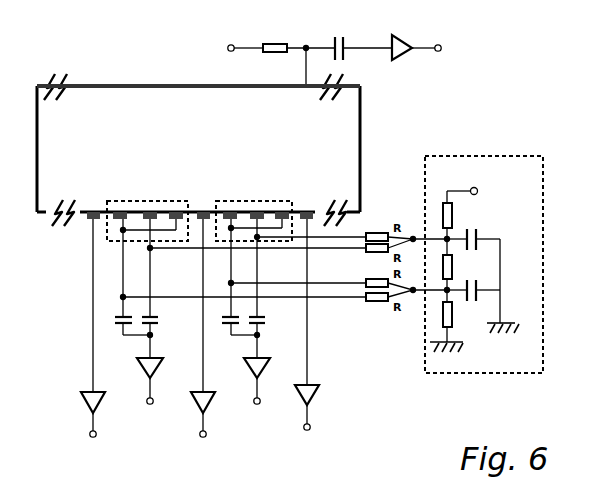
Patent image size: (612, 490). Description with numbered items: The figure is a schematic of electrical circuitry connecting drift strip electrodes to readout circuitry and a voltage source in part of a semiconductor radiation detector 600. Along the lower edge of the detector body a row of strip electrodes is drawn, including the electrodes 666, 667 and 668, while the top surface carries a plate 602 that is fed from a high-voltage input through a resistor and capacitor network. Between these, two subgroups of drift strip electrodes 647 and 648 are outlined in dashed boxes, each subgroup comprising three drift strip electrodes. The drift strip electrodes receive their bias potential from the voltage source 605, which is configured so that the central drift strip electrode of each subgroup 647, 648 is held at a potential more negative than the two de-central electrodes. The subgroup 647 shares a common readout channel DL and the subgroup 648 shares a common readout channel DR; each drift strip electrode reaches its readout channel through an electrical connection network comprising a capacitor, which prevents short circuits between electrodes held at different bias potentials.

The semiconductor radiation detector 600 is at (507, 40).
The drive plate / top electrode 602 is at (198, 61).
The voltage source 605 is at (496, 238).
The subgroup of drift strip electrodes 647 is at (150, 271).
The subgroup of drift strip electrodes 648 is at (252, 298).
The sensing electrode 666 is at (111, 281).
The sensing electrode 667 is at (227, 288).
The sensing electrode 668 is at (326, 288).